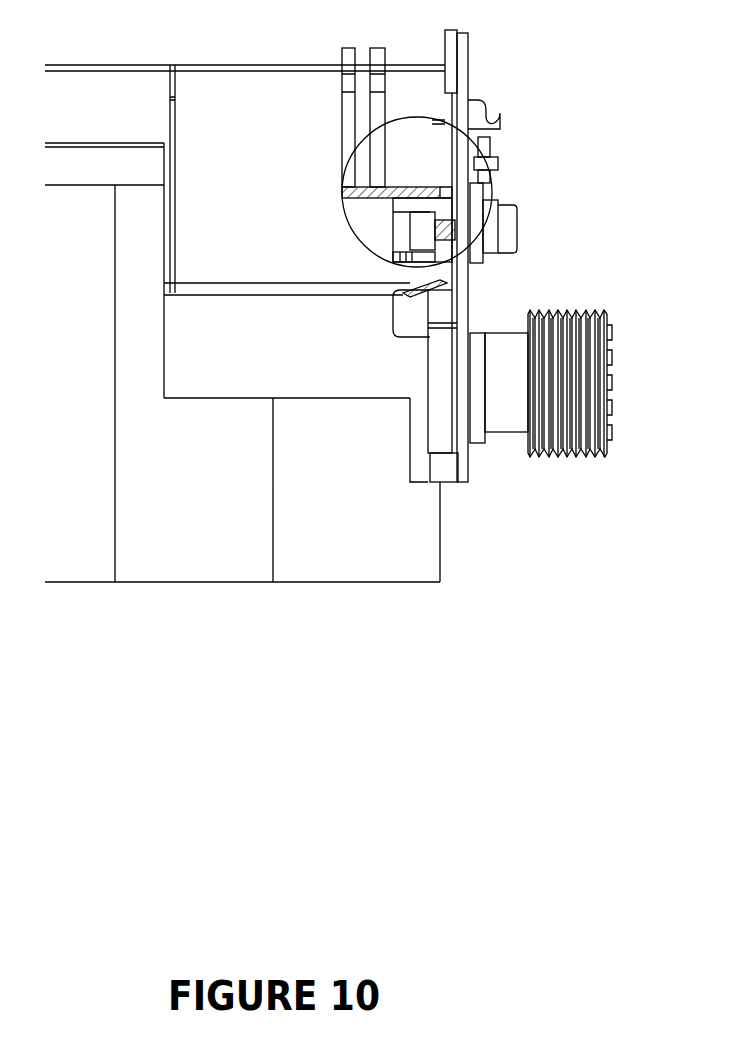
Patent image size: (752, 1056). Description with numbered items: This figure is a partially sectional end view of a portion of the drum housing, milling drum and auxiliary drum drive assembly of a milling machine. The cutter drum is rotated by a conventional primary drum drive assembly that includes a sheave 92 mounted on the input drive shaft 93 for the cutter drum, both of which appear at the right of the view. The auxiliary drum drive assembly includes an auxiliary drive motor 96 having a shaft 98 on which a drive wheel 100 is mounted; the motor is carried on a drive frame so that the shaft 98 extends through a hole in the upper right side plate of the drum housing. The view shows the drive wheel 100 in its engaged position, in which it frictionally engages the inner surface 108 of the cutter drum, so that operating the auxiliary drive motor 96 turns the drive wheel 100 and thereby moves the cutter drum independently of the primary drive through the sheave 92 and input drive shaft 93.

The sheave 92 is at (597, 310).
The input drive shaft 93 is at (500, 332).
The auxiliary drive motor 96 is at (520, 225).
The shaft 98 is at (445, 194).
The drive wheel 100 is at (388, 225).
The inner surface 108 is at (358, 200).